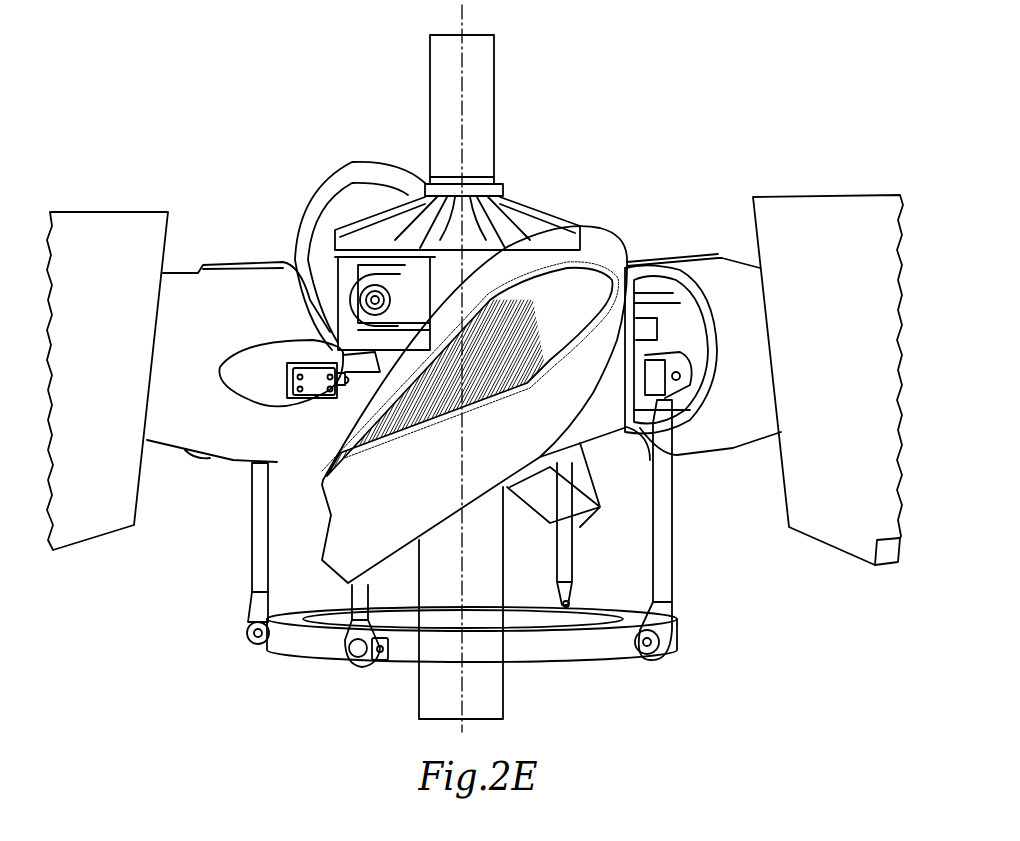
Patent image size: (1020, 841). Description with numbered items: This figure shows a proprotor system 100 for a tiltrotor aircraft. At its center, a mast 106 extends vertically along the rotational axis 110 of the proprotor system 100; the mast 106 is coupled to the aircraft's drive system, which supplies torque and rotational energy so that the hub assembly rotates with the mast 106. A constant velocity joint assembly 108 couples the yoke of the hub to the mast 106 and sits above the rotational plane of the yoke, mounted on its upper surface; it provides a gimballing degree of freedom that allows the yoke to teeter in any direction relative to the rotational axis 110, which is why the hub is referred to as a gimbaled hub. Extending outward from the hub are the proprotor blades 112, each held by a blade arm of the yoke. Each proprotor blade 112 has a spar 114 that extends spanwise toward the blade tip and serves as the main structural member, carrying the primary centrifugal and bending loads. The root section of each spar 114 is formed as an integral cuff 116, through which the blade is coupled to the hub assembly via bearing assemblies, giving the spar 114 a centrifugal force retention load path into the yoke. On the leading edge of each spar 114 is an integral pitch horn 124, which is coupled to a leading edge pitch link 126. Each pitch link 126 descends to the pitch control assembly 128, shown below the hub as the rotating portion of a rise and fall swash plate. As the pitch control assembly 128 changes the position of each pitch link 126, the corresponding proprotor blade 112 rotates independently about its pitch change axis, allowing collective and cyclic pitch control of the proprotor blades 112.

The proprotor system 100 is at (676, 88).
The mast 106 is at (432, 115).
The constant velocity joint assembly 108 is at (560, 203).
The rotational axis 110 is at (458, 22).
The proprotor blade 112 is at (96, 227).
The spar 114 is at (180, 285).
The integral cuff 116 is at (230, 312).
The integral pitch horn 124 is at (247, 383).
The leading edge pitch link 126 is at (313, 390).
The pitch control assembly 128 is at (303, 664).